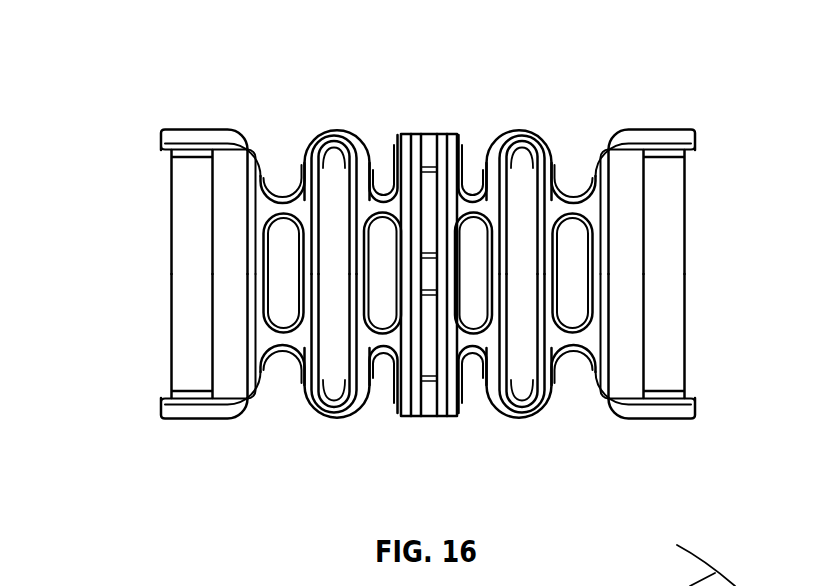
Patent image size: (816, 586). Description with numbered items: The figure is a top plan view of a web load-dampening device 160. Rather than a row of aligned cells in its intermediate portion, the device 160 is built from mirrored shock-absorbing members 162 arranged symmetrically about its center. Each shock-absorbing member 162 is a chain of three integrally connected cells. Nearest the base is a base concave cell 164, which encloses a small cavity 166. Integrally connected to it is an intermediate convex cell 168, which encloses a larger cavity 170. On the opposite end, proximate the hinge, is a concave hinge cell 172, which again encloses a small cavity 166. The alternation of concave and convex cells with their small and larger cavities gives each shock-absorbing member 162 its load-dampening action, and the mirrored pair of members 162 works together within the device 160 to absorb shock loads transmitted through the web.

The web load-dampening device 160 is at (140, 66).
The shock-absorbing member 162 is at (346, 112).
The base concave cell 164 is at (279, 160).
The small cavity 166 is at (382, 272).
The intermediate convex cell 168 is at (342, 418).
The larger cavity 170 is at (337, 183).
The concave hinge cell 172 is at (393, 187).